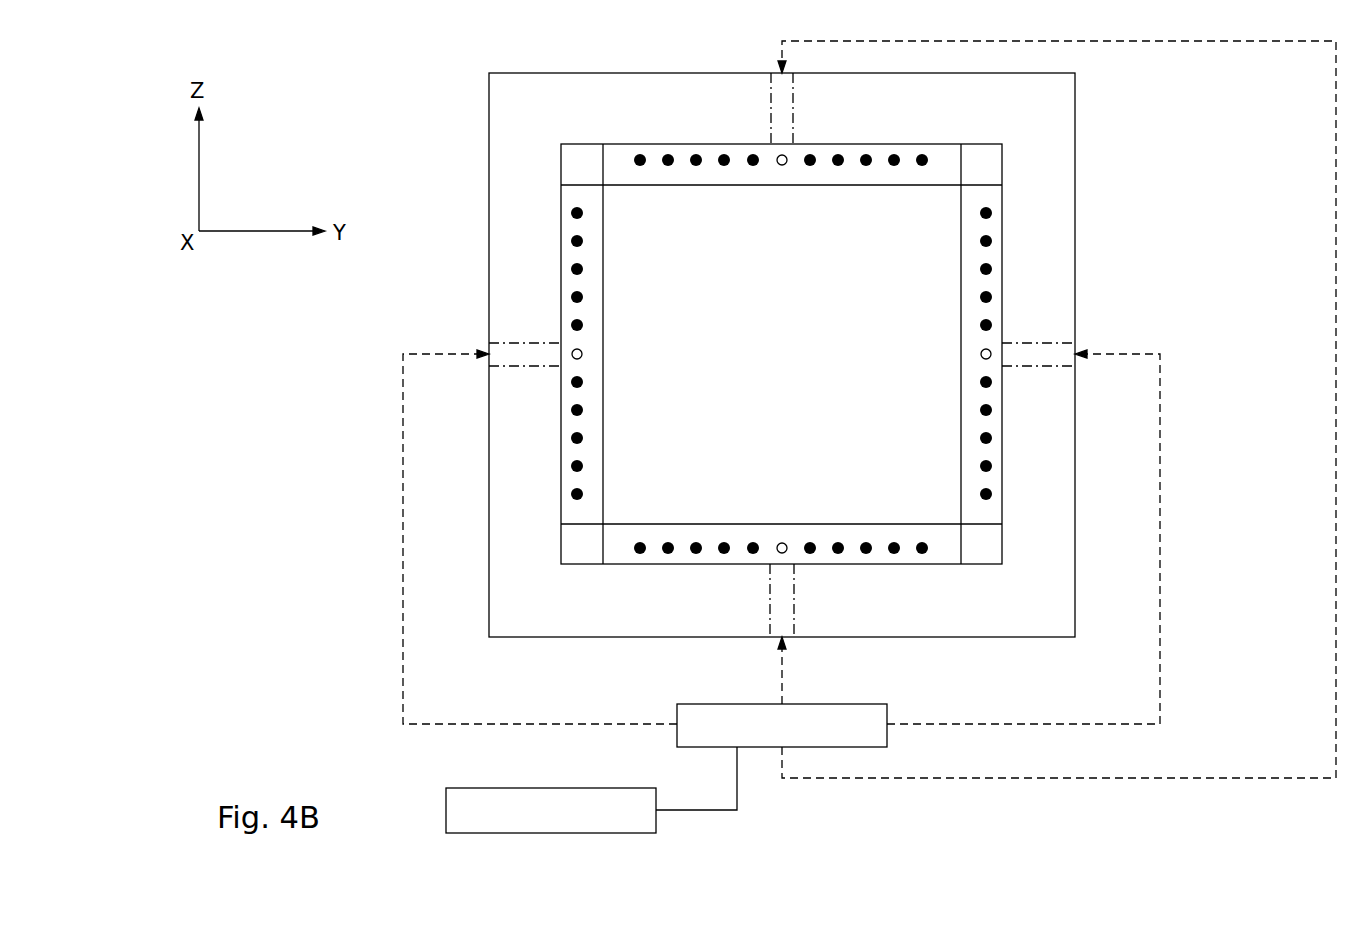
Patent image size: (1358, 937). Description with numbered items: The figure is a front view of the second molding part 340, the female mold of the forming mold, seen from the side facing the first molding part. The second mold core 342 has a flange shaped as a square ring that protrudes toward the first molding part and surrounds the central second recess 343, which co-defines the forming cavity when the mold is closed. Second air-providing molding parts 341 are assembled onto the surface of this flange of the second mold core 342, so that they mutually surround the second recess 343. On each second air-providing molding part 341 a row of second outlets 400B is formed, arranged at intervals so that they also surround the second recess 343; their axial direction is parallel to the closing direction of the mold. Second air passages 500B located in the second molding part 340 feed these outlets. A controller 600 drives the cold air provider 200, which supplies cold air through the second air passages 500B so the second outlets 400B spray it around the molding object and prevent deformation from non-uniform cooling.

The second molding part 340 is at (520, 69).
The second air-providing molding parts 341 is at (945, 160).
The second mold core 342 is at (1002, 175).
The second recess 343 is at (625, 200).
The second outlets 400B is at (668, 152).
The second air passages 500B is at (782, 154).
The cold air provider 200 is at (677, 734).
The controller 600 is at (446, 803).